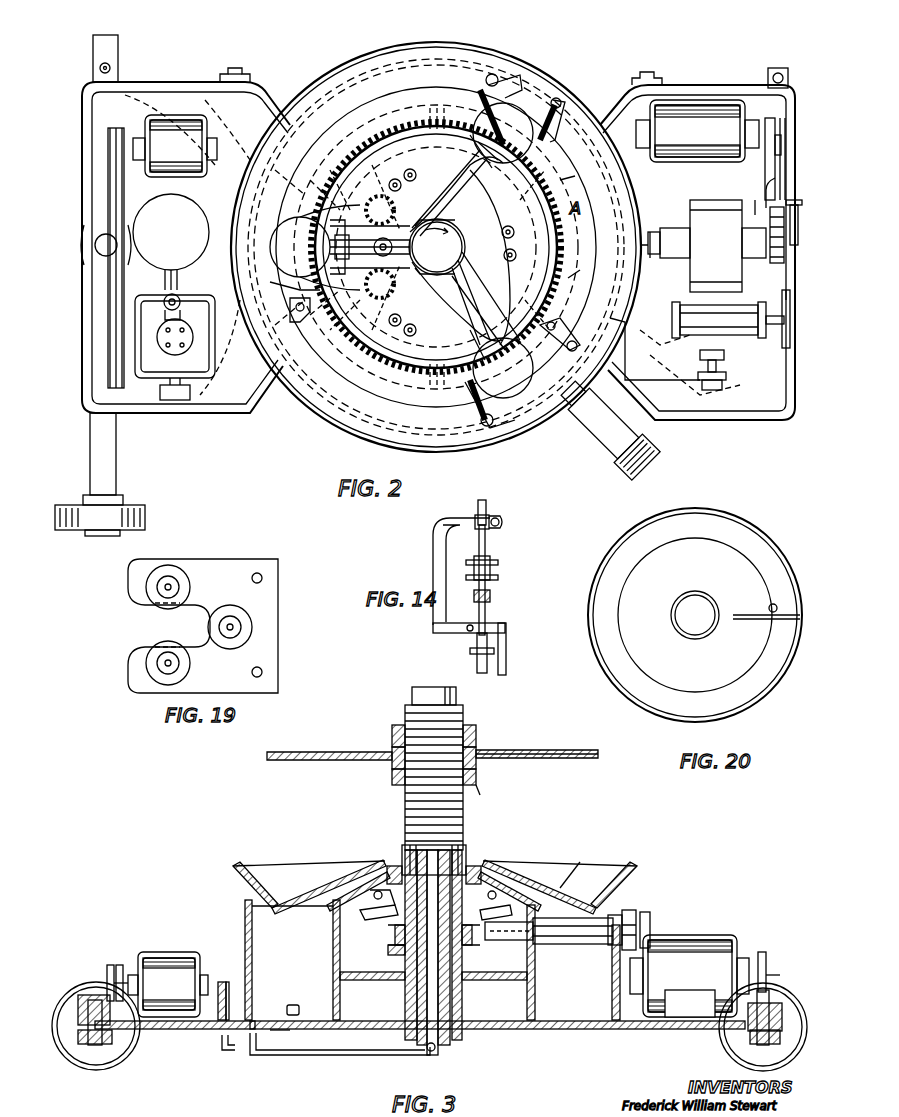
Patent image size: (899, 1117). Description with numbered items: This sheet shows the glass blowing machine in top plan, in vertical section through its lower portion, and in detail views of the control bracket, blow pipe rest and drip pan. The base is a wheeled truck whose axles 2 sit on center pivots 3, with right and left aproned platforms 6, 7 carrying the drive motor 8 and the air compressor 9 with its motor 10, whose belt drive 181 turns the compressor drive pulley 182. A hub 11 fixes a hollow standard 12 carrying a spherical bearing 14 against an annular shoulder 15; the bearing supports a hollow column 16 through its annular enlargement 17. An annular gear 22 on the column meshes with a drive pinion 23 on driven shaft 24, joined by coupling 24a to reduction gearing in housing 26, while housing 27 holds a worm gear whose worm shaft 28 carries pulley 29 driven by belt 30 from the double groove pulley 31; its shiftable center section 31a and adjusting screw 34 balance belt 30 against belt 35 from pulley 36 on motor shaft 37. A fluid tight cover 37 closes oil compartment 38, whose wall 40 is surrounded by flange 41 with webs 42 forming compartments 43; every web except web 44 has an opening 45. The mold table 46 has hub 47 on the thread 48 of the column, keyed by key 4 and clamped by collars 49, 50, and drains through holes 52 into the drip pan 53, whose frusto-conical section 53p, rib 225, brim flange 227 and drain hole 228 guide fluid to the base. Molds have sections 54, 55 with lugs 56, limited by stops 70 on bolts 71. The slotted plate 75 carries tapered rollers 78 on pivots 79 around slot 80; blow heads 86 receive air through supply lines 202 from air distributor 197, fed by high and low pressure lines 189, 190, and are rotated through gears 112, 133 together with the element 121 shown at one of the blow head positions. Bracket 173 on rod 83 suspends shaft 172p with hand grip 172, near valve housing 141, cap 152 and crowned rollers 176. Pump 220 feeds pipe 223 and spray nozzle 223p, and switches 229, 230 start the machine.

In FIG. 2, the axles 2 is at (90, 447).
In FIG. 2, the center pivots 3 is at (92, 245).
In FIG. 3, the center pivots 3 is at (96, 1026).
In FIG. 3, the key 4 is at (476, 772).
In FIG. 2, the right aproned platform 6 is at (655, 420).
In FIG. 3, the right aproned platform 6 is at (680, 1030).
In FIG. 2, the left aproned platform 7 is at (232, 420).
In FIG. 3, the left aproned platform 7 is at (175, 1030).
In FIG. 2, the drive motor 8 is at (692, 78).
In FIG. 3, the drive motor 8 is at (700, 935).
In FIG. 2, the air compressor 9 is at (190, 315).
In FIG. 2, the motor 10 is at (205, 177).
In FIG. 3, the motor 10 is at (155, 952).
In FIG. 3, the hub 11 is at (462, 1002).
In FIG. 3, the hollow vertical standard 12 is at (405, 1002).
In FIG. 3, the spherical antifriction bearing 14 is at (388, 952).
In FIG. 3, the annular shoulder 15 is at (487, 930).
In FIG. 3, the hollow column 16 is at (466, 850).
In FIG. 3, the annular enlargement 17 is at (392, 935).
In FIG. 3, the annular gear 22 is at (374, 911).
In FIG. 3, the drive pinion 23 is at (500, 945).
In FIG. 3, the driven shaft 24 is at (560, 950).
In FIG. 2, the coupling 24a is at (660, 270).
In FIG. 3, the coupling 24a is at (645, 898).
In FIG. 2, the housing 26 is at (695, 222).
In FIG. 2, the housing 27 is at (732, 335).
In FIG. 2, the worm shaft 28 is at (770, 316).
In FIG. 3, the worm shaft 28 is at (775, 978).
In FIG. 2, the pulley 29 is at (790, 340).
In FIG. 3, the pulley 29 is at (772, 970).
In FIG. 2, the belt 30 is at (786, 296).
In FIG. 2, the three part double groove pulley 31 is at (784, 262).
In FIG. 2, the center section 31a is at (775, 178).
In FIG. 2, the screw 34 is at (800, 200).
In FIG. 2, the belt 35 is at (755, 215).
In FIG. 2, the pulley 36 is at (775, 128).
In FIG. 2, the motor shaft / fluid tight cover 37 is at (781, 148).
In FIG. 3, the motor shaft / fluid tight cover 37 is at (490, 868).
In FIG. 3, the oil compartment 38 is at (345, 955).
In FIG. 3, the wall 40 is at (535, 968).
In FIG. 2, the annular upstanding flange 41 is at (380, 440).
In FIG. 3, the annular upstanding flange 41 is at (243, 930).
In FIG. 2, the radially extending vertical webs 42 is at (348, 150).
In FIG. 2, the open top compartments 43 is at (395, 85).
In FIG. 3, the open top compartments 43 is at (285, 958).
In FIG. 2, the radial rib / web 44 is at (572, 252).
In FIG. 2, the opening 45 is at (312, 185).
In FIG. 3, the opening 45 is at (290, 1030).
In FIG. 3, the circular mold table 46 is at (545, 745).
In FIG. 3, the axial hub 47 is at (476, 745).
In FIG. 3, the external thread 48 is at (465, 805).
In FIG. 3, the screw collar 49 is at (489, 791).
In FIG. 3, the screw collar 50 is at (476, 733).
In FIG. 3, the holes 52 is at (537, 745).
In FIG. 2, the annular drip pan 53 is at (320, 435).
In FIG. 20, the annular drip pan 53 is at (768, 690).
In FIG. 3, the annular drip pan 53 is at (612, 858).
In FIG. 20, the frusto-conical center section 53p is at (695, 615).
In FIG. 3, the frusto-conical center section 53p is at (580, 862).
In FIG. 2, the mold section 54 is at (490, 405).
In FIG. 2, the mold section 55 is at (504, 383).
In FIG. 2, the apertured lug 56 is at (568, 330).
In FIG. 2, the mold stops 70 is at (310, 335).
In FIG. 2, the bolts 71 is at (295, 300).
In FIG. 19, the slotted plate 75 is at (218, 556).
In FIG. 19, the tapered rollers 78 is at (179, 663).
In FIG. 19, the vertical pivots 79 is at (179, 587).
In FIG. 19, the slot 80 is at (203, 626).
In FIG. 14, the rod 83 is at (486, 503).
In FIG. 2, the blow head 86 is at (560, 90).
In FIG. 2, the gear 112 is at (577, 187).
In FIG. 2, the satellite cylinder 121 is at (503, 118).
In FIG. 2, the upper gear 133 is at (437, 247).
In FIG. 14, the valve housing 141 is at (500, 565).
In FIG. 14, the perforated cap 152 is at (492, 597).
In FIG. 14, the hand grip 172 is at (506, 660).
In FIG. 14, the shaft 172p is at (433, 630).
In FIG. 14, the bracket 173 is at (433, 557).
In FIG. 14, the crowned rollers 176 is at (466, 650).
In FIG. 2, the belt drive 181 is at (128, 212).
In FIG. 2, the drive pulley 182 is at (110, 325).
In FIG. 3, the high pressure line 189 is at (222, 1058).
In FIG. 3, the low pressure line 190 is at (290, 1058).
In FIG. 2, the air distributor 197 is at (437, 247).
In FIG. 2, the supply lines 202 is at (405, 251).
In FIG. 2, the pump 220 is at (730, 374).
In FIG. 2, the pipe 223 is at (660, 385).
In FIG. 2, the spray nozzle 223p is at (580, 280).
In FIG. 20, the radial upstanding rib 225 is at (760, 612).
In FIG. 3, the brim flange 227 is at (230, 870).
In FIG. 20, the drain hole 228 is at (775, 604).
In FIG. 2, the switch 229 is at (248, 72).
In FIG. 2, the switch 230 is at (660, 76).